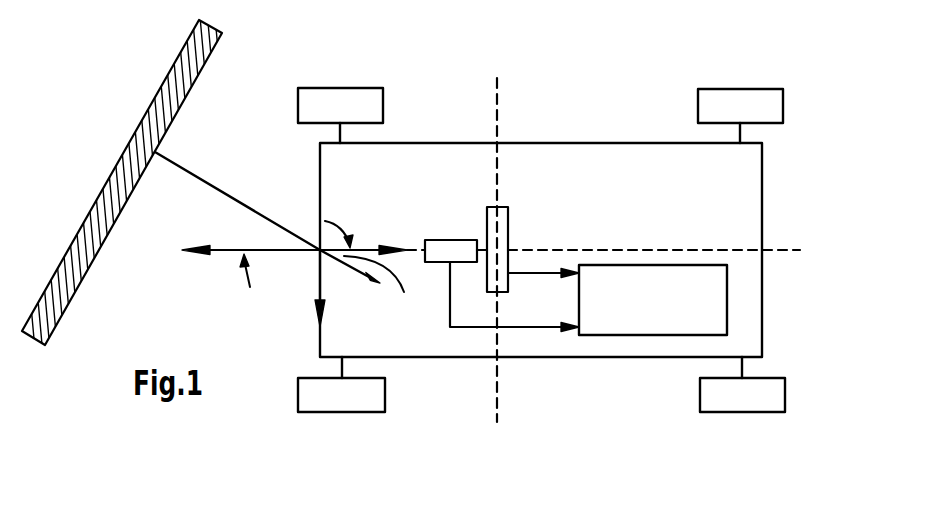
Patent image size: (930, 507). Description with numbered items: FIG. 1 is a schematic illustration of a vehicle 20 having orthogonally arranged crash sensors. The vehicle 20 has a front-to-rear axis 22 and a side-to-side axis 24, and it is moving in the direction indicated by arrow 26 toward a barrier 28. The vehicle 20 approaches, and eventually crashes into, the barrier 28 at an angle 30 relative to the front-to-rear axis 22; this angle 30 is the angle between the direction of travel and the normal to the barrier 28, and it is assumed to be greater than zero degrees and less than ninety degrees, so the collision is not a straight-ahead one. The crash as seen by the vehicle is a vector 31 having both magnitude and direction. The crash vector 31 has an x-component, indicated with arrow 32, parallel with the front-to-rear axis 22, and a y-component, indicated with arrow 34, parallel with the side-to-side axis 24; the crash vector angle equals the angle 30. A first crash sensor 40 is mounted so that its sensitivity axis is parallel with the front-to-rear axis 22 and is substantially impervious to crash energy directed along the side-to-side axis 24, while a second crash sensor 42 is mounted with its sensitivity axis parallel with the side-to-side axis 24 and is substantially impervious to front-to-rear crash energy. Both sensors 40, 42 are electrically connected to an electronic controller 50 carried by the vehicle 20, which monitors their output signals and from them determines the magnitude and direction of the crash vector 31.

The vehicle 20 is at (530, 143).
The front-to-rear axis 22 is at (595, 250).
The side-to-side axis 24 is at (498, 372).
The arrow 26 is at (227, 255).
The barrier 28 is at (181, 106).
The angle 30 is at (258, 207).
The crash vector 31 is at (337, 267).
The arrow 32 is at (362, 249).
The arrow 34 is at (318, 292).
The first crash sensor 40 is at (452, 248).
The second crash sensor 42 is at (497, 235).
The electronic controller 50 is at (633, 315).